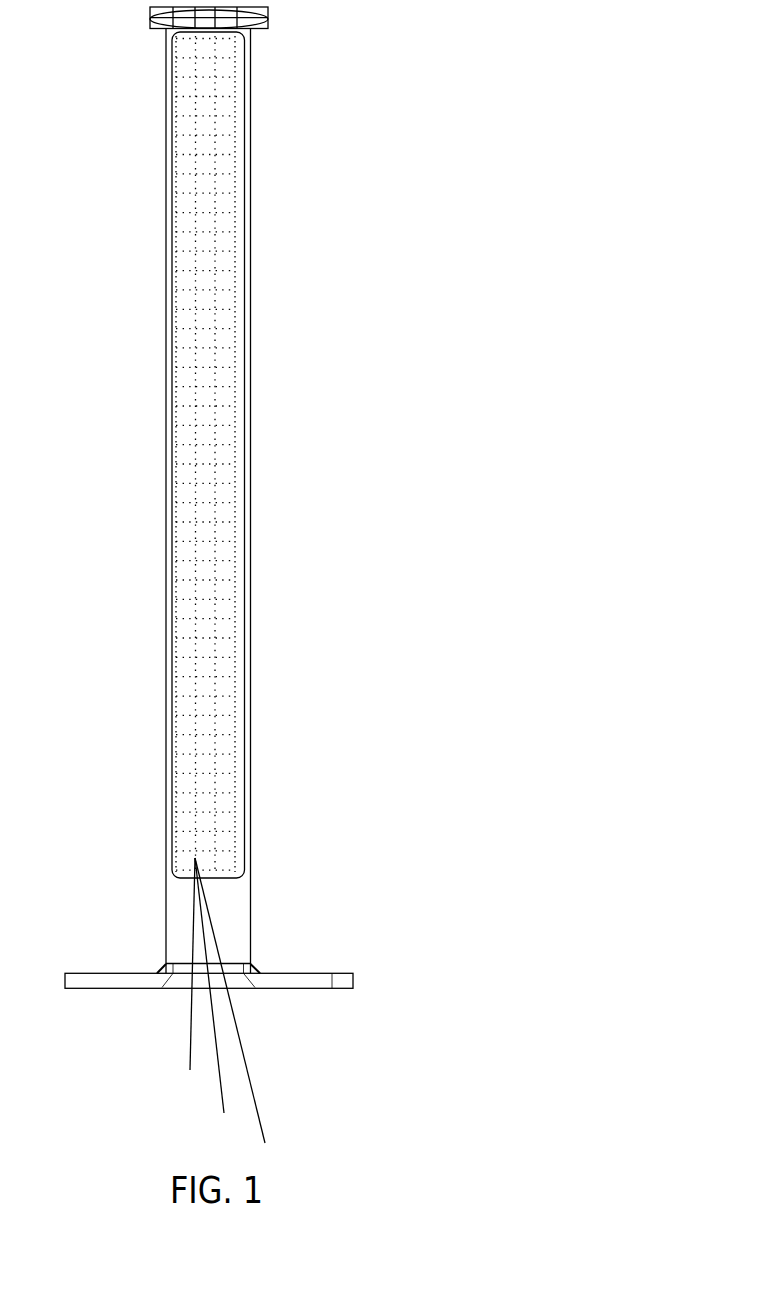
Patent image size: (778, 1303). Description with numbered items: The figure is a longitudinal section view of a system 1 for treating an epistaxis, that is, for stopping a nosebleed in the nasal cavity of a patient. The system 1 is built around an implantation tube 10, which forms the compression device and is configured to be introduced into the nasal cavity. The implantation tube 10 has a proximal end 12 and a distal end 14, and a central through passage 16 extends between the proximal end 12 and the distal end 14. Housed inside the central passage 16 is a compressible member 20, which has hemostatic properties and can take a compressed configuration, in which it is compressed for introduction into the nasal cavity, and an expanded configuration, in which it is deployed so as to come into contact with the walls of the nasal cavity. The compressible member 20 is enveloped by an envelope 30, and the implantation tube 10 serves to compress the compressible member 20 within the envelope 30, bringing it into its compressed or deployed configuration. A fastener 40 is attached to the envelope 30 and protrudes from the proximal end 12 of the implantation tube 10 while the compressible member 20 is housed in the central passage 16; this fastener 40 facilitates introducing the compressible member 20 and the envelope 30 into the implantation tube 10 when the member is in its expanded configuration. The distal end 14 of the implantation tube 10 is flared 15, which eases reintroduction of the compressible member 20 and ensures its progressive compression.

The system for treating an epistaxis 1 is at (380, 68).
The implantation tube 10 is at (252, 408).
The proximal end 12 is at (257, 968).
The distal end 14 is at (256, 29).
The flared portion 15 is at (150, 32).
The central through passage 16 is at (235, 912).
The compressible member 20 is at (225, 223).
The envelope 30 is at (223, 347).
The fastener 40 is at (258, 1060).